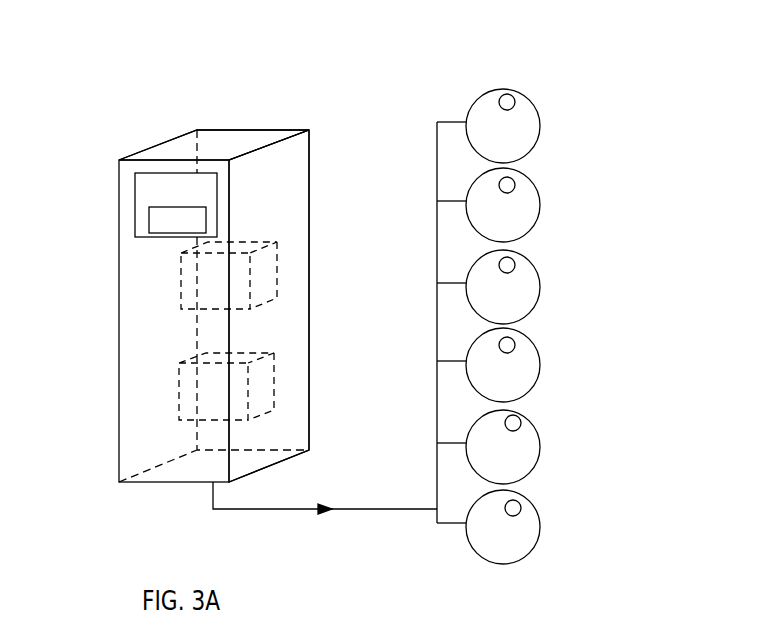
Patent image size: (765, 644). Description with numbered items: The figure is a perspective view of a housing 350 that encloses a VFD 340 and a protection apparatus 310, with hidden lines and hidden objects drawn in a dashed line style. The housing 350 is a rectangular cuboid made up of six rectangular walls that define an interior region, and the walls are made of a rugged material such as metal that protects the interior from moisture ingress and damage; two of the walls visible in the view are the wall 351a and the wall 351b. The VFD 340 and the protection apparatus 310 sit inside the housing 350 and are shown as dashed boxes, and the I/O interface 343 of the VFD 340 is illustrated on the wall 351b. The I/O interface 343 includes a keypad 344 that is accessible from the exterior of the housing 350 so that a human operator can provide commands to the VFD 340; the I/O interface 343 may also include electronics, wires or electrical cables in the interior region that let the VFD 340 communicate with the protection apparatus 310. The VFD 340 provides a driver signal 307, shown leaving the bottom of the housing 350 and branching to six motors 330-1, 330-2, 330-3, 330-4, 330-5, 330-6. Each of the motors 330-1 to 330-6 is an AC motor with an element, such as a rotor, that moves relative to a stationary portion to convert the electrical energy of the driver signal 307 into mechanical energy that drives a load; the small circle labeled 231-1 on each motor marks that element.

The housing 350 is at (252, 92).
The wall 351a is at (296, 195).
The wall 351b is at (212, 139).
The I/O interface 343 is at (176, 205).
The keypad 344 is at (177, 220).
The VFD 340 is at (200, 277).
The protection apparatus 310 is at (212, 393).
The driver signal 307 is at (303, 509).
The motor 330-1 is at (488, 126).
The motor 330-2 is at (488, 205).
The motor 330-3 is at (488, 287).
The motor 330-4 is at (488, 365).
The motor 330-5 is at (488, 447).
The motor 330-6 is at (488, 527).
The sensor port 231-1 is at (515, 101).